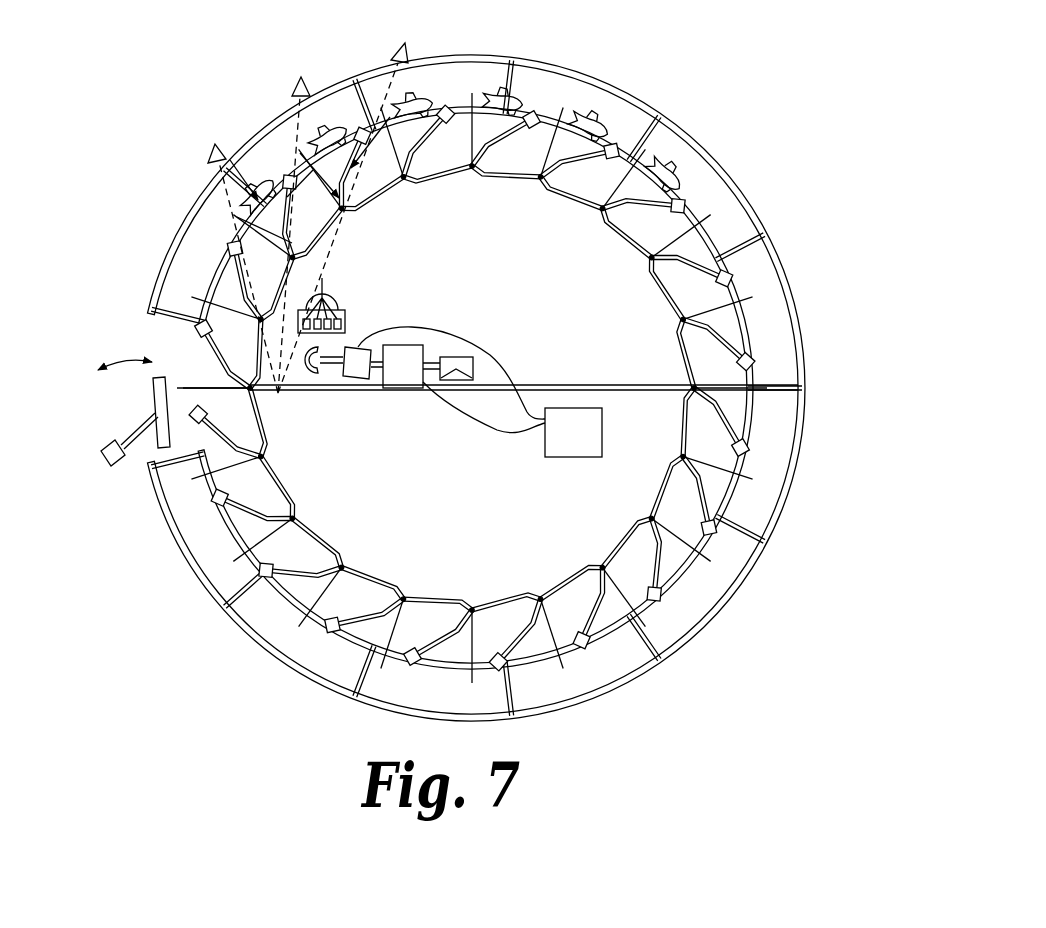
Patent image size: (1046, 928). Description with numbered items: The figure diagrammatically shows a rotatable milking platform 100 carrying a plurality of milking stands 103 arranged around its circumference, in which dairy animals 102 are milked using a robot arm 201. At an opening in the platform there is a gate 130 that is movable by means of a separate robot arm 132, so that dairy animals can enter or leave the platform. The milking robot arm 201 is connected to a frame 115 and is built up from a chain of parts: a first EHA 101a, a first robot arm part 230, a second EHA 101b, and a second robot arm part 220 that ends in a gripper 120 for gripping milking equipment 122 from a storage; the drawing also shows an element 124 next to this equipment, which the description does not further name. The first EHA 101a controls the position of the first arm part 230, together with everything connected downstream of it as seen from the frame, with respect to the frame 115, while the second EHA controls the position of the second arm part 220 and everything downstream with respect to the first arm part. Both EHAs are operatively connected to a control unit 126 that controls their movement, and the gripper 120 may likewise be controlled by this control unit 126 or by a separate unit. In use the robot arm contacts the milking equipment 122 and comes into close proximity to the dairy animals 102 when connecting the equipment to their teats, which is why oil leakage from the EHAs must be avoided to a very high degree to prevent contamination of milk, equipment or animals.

The rotatable milking platform 100 is at (705, 116).
The dairy animal 102 is at (527, 167).
The milking stand 103 is at (547, 650).
The frame 115 is at (470, 362).
The gripper 120 is at (304, 380).
The milking equipment 122 is at (330, 297).
The sensor 124 is at (345, 322).
The control unit 126 is at (578, 457).
The gate 130 is at (158, 408).
The robot arm 132 is at (103, 465).
The robot arm 201 is at (433, 480).
The second robot arm part 220 is at (330, 366).
The first robot arm part 230 is at (377, 369).
The first EHA 101a is at (405, 347).
The second EHA 101b is at (360, 380).